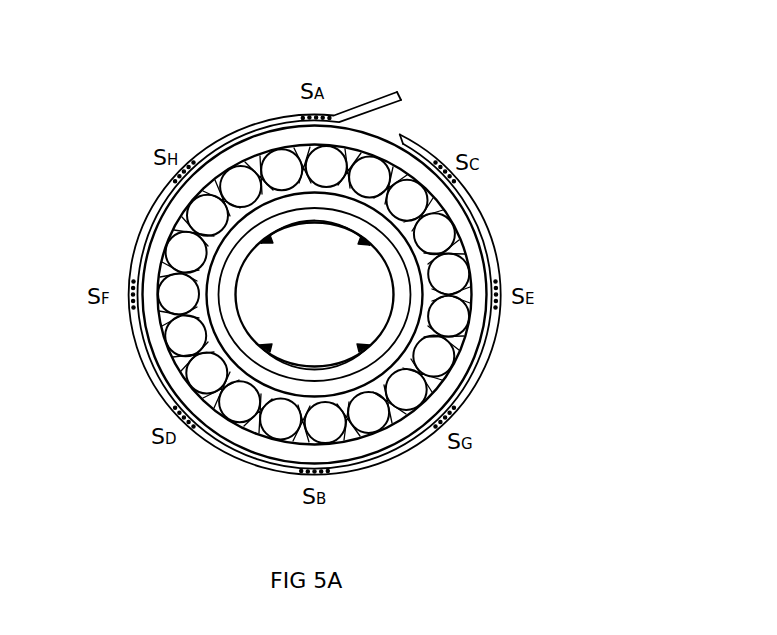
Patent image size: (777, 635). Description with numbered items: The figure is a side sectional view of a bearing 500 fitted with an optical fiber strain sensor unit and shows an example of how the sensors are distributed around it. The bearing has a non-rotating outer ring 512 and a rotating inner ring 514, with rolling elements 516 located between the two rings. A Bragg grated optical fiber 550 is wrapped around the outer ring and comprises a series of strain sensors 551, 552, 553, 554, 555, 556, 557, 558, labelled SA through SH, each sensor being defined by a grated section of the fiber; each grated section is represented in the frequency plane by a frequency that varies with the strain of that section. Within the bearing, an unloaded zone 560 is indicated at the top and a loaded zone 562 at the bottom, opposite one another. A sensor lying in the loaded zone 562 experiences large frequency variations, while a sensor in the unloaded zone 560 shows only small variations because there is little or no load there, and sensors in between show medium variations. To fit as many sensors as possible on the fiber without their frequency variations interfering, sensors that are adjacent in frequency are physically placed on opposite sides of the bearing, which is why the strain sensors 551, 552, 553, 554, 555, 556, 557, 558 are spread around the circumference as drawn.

The bearing 500 is at (568, 118).
The outer ring 512 is at (481, 264).
The inner ring 514 is at (228, 338).
The rolling elements 516 is at (281, 168).
The optical fiber strain sensor unit 550 is at (404, 97).
The strain sensor SA 551 is at (323, 115).
The strain sensor SB 552 is at (328, 476).
The strain sensor SC 553 is at (452, 178).
The strain sensor SD 554 is at (190, 430).
The strain sensor SE 555 is at (502, 304).
The strain sensor SF 556 is at (173, 289).
The strain sensor SG 557 is at (452, 417).
The strain sensor SH 558 is at (178, 174).
The unloaded zone 560 is at (333, 249).
The loaded zone 562 is at (306, 351).